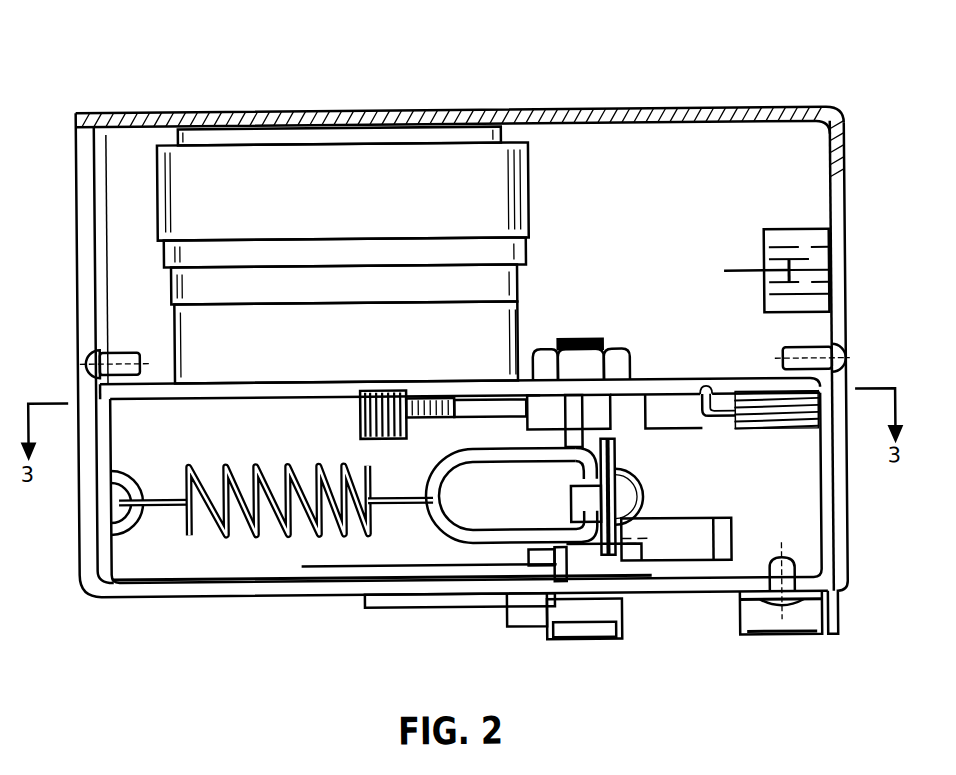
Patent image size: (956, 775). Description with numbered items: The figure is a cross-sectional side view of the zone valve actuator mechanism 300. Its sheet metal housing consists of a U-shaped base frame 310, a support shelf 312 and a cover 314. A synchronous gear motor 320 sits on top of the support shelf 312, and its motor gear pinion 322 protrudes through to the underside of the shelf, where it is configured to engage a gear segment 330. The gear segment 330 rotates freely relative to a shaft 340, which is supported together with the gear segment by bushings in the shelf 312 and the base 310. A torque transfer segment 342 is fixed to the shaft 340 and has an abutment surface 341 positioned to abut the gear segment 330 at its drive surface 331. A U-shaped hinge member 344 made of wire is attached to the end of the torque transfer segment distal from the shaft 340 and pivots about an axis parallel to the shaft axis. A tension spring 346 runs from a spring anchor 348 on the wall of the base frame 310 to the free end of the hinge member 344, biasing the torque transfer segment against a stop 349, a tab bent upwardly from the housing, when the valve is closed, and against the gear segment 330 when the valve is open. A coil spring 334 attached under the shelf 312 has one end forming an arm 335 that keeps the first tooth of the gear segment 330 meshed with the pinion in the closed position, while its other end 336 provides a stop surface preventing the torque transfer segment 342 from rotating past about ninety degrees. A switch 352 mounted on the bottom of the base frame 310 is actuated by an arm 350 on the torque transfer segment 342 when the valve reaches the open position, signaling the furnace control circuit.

The switch assembly 300 is at (560, 80).
The U-shaped base frame 310 is at (148, 592).
The support shelf 312 is at (680, 386).
The cover 314 is at (732, 110).
The synchronous gear motor 320 is at (490, 196).
The motor gear pinion 322 is at (360, 400).
The gear segment 330 is at (430, 418).
The drive surface 331 is at (466, 412).
The coil spring 334 is at (820, 414).
The arm 335 is at (726, 436).
The other end of the coil spring 336 is at (706, 418).
The shaft 340 is at (582, 492).
The abutment surface 341 is at (548, 402).
The torque transfer segment 342 is at (612, 560).
The U-shaped hinge member 344 is at (446, 527).
The tension spring 346 is at (256, 538).
The spring anchor 348 is at (130, 480).
The stop 349 is at (548, 574).
The arm 350 is at (732, 532).
The switch 352 is at (336, 566).